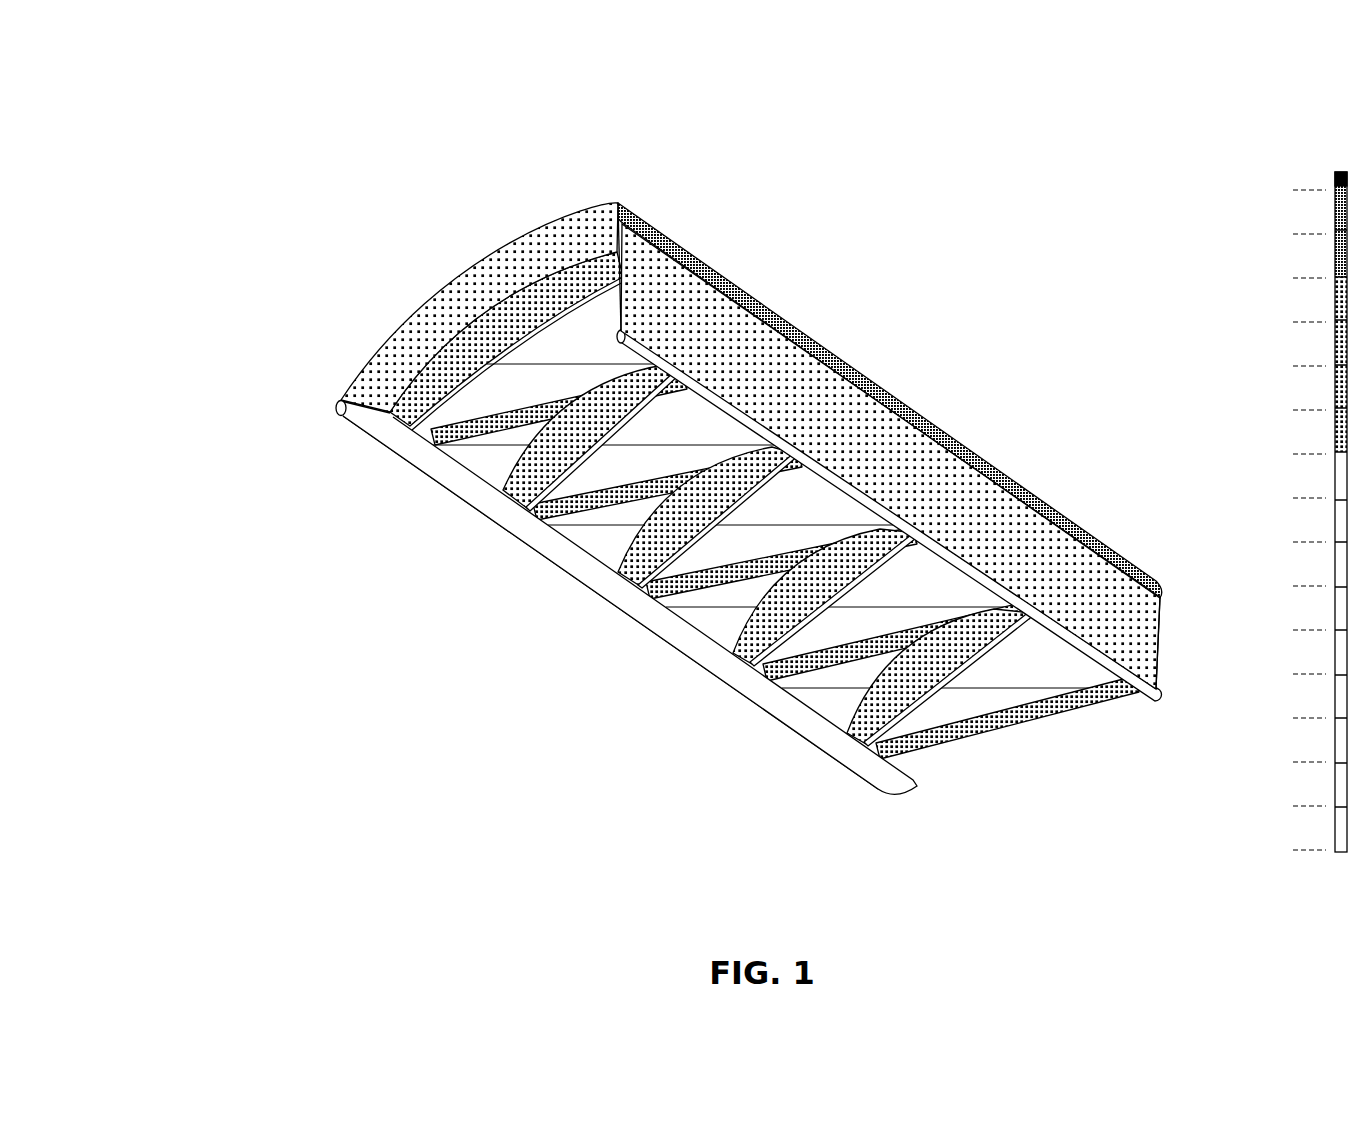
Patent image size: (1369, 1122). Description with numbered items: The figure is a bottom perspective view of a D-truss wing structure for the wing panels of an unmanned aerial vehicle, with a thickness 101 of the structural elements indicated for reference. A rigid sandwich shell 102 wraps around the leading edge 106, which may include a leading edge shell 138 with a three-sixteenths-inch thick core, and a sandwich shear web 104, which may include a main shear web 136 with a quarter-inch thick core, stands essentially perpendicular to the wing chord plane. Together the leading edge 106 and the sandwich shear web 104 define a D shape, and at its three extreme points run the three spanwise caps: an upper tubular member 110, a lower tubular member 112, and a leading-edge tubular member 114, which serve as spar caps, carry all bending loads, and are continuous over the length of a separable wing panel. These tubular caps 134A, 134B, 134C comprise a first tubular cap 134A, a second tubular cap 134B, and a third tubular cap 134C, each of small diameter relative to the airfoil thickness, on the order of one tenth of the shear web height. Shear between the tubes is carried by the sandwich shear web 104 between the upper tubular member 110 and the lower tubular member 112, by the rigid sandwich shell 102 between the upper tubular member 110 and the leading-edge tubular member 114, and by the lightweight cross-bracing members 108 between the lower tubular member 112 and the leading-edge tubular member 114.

The thickness 101 is at (1328, 158).
The rigid sandwich shell 102 is at (498, 260).
The sandwich shear web 104 is at (1140, 636).
The leading edge 106 is at (587, 590).
The lightweight cross-bracing members 108 is at (1047, 687).
The upper tubular member 110 is at (657, 223).
The lower tubular member 112 is at (1165, 707).
The leading-edge tubular member 114 is at (352, 422).
The first tubular cap 134A is at (603, 215).
The second tubular cap 134B is at (597, 330).
The third tubular cap 134C is at (334, 398).
The main shear web 136 is at (891, 440).
The leading edge shell 138 is at (450, 510).